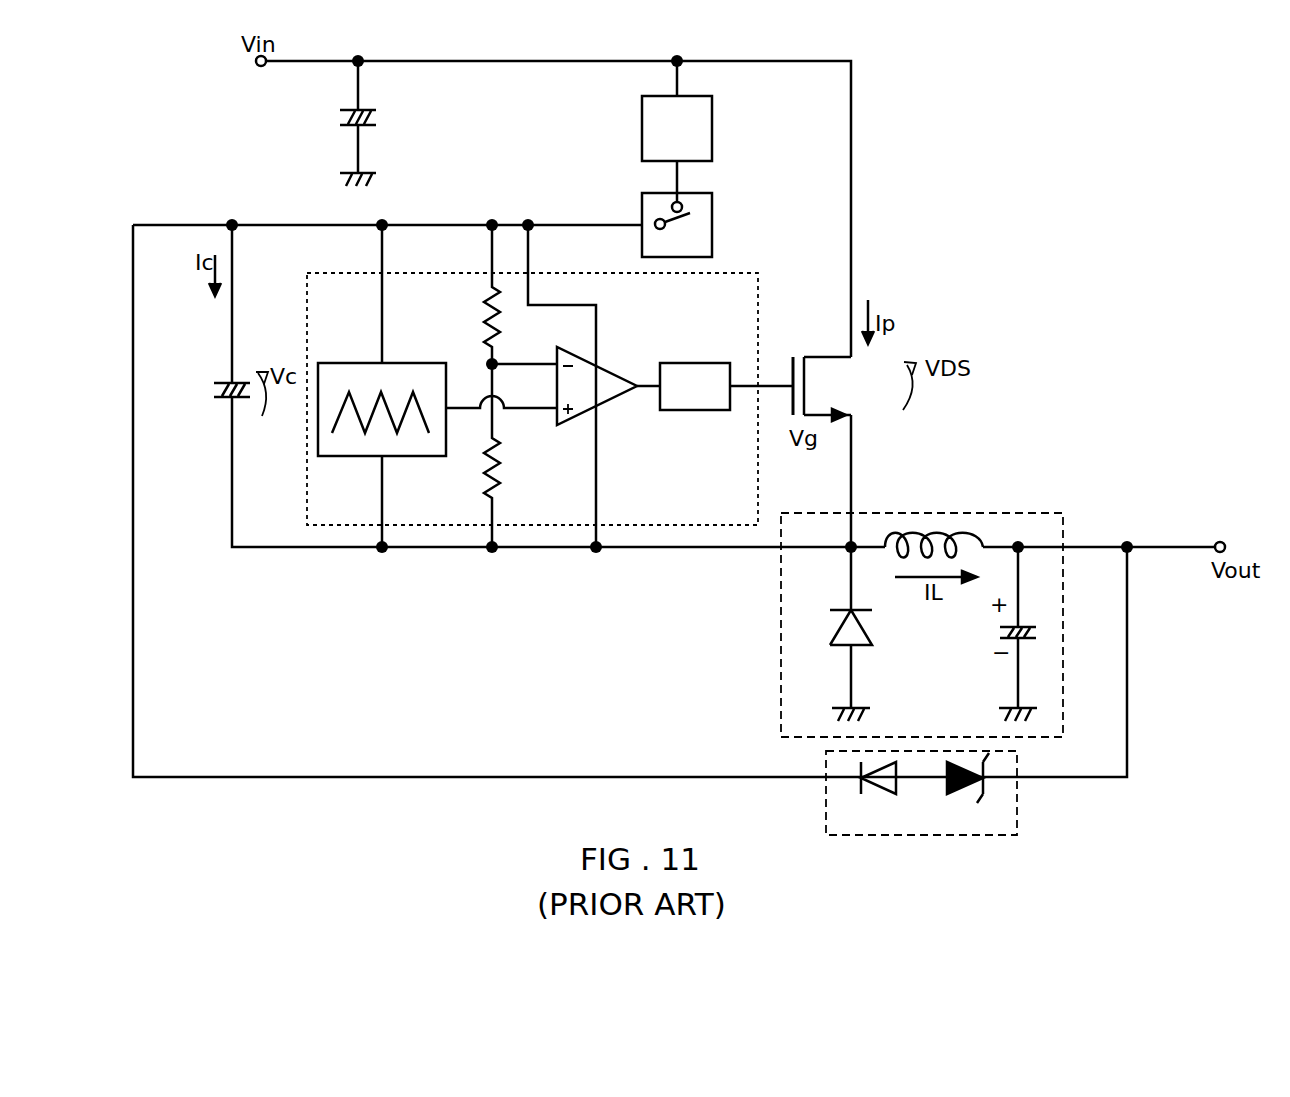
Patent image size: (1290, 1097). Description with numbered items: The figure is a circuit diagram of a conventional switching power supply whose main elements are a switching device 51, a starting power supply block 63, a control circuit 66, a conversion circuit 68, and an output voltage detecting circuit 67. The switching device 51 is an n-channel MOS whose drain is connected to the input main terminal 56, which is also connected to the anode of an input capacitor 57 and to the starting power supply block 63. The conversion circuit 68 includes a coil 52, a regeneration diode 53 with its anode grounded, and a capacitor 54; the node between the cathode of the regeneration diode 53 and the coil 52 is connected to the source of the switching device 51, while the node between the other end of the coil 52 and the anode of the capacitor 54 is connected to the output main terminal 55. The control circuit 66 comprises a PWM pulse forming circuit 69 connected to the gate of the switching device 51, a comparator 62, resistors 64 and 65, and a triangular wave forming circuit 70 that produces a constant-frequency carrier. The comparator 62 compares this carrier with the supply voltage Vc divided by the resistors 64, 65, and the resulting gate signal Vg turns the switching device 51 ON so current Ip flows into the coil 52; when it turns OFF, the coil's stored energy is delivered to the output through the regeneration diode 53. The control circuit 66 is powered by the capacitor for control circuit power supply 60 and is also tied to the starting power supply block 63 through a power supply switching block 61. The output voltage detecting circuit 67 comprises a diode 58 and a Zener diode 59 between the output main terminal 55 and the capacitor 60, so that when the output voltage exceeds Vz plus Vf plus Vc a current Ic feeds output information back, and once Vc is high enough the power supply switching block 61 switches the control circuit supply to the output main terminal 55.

The switching device 51 is at (806, 387).
The coil 52 is at (983, 537).
The regeneration diode 53 is at (866, 625).
The capacitor 54 is at (1000, 633).
The output main terminal 55 is at (1224, 541).
The input main terminal 56 is at (257, 66).
The input capacitor 57 is at (377, 117).
The diode 58 is at (873, 790).
The Zener diode 59 is at (961, 790).
The capacitor for control circuit power supply 60 is at (214, 393).
The power supply switching block 61 is at (712, 227).
The comparator 62 is at (578, 420).
The starting power supply block 63 is at (712, 128).
The resistor 64 is at (486, 341).
The resistor 65 is at (488, 489).
The control circuit 66 is at (342, 273).
The output voltage detecting circuit 67 is at (1017, 800).
The conversion circuit 68 is at (1000, 513).
The PWM pulse forming circuit 69 is at (697, 363).
The triangular wave forming circuit 70 is at (357, 363).